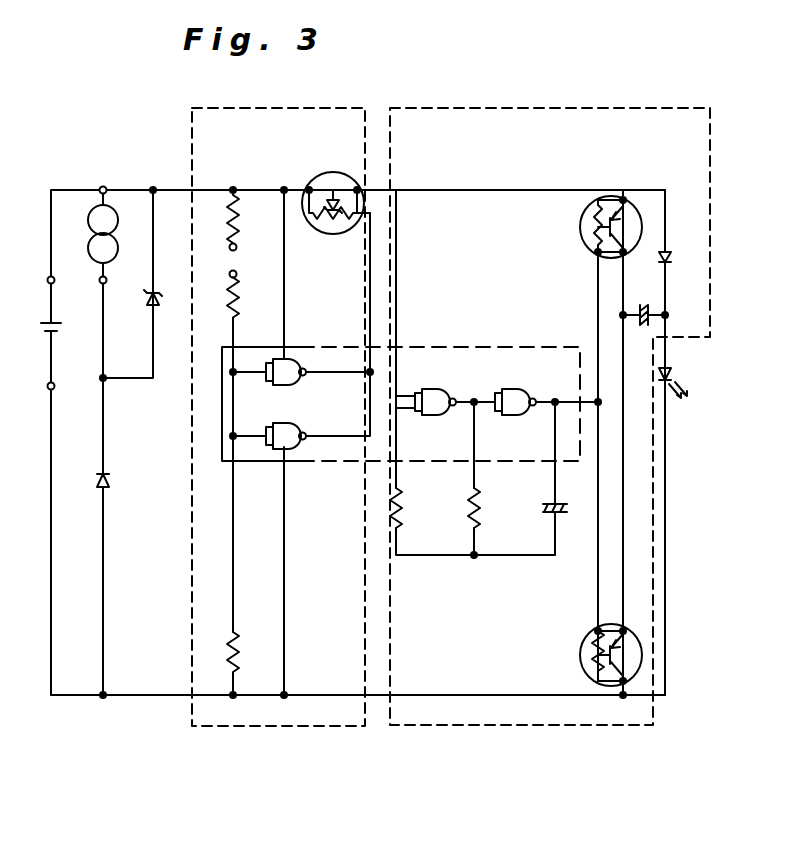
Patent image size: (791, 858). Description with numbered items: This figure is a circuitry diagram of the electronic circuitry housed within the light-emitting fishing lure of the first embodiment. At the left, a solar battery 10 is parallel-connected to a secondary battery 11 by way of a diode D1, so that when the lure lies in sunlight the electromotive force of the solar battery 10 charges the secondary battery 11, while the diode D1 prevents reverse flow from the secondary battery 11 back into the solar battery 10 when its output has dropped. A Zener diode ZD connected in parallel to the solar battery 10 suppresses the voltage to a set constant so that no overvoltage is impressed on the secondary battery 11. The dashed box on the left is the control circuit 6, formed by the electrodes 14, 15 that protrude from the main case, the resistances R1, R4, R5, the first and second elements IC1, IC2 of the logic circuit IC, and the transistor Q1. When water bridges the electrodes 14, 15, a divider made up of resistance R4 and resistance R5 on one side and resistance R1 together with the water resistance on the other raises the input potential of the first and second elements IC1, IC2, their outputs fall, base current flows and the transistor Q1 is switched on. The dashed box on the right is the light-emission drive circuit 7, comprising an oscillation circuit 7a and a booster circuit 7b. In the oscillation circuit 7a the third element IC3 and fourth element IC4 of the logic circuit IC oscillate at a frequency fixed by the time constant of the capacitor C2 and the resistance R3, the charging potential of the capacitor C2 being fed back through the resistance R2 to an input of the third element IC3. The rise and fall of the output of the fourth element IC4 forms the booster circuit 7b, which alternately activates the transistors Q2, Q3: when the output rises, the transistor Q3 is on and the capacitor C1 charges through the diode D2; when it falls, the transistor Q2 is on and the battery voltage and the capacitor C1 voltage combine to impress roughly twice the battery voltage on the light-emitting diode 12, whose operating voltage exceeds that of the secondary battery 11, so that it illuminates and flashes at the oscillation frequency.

The solar battery 10 is at (97, 214).
The secondary battery 11 is at (43, 332).
The light-emitting diode 12 is at (683, 372).
The electrode 14 is at (238, 246).
The electrode 15 is at (237, 274).
The control circuit 6 is at (255, 727).
The light-emission drive circuit 7 is at (603, 727).
The oscillation circuit 7a is at (491, 570).
The booster circuit 7b is at (572, 286).
The resistance R1 is at (227, 650).
The resistance R2 is at (402, 515).
The resistance R3 is at (480, 515).
The resistance R4 is at (230, 218).
The resistance R5 is at (228, 305).
The capacitor C1 is at (647, 303).
The capacitor C2 is at (565, 515).
The diode D1 is at (112, 482).
The diode D2 is at (667, 250).
The Zener diode ZD is at (148, 300).
The transistor Q1 is at (331, 175).
The transistor Q2 is at (584, 213).
The transistor Q3 is at (580, 668).
The logic circuit IC is at (498, 347).
The first element IC1 is at (296, 358).
The second element IC2 is at (296, 449).
The third element IC3 is at (428, 400).
The fourth element IC4 is at (512, 402).